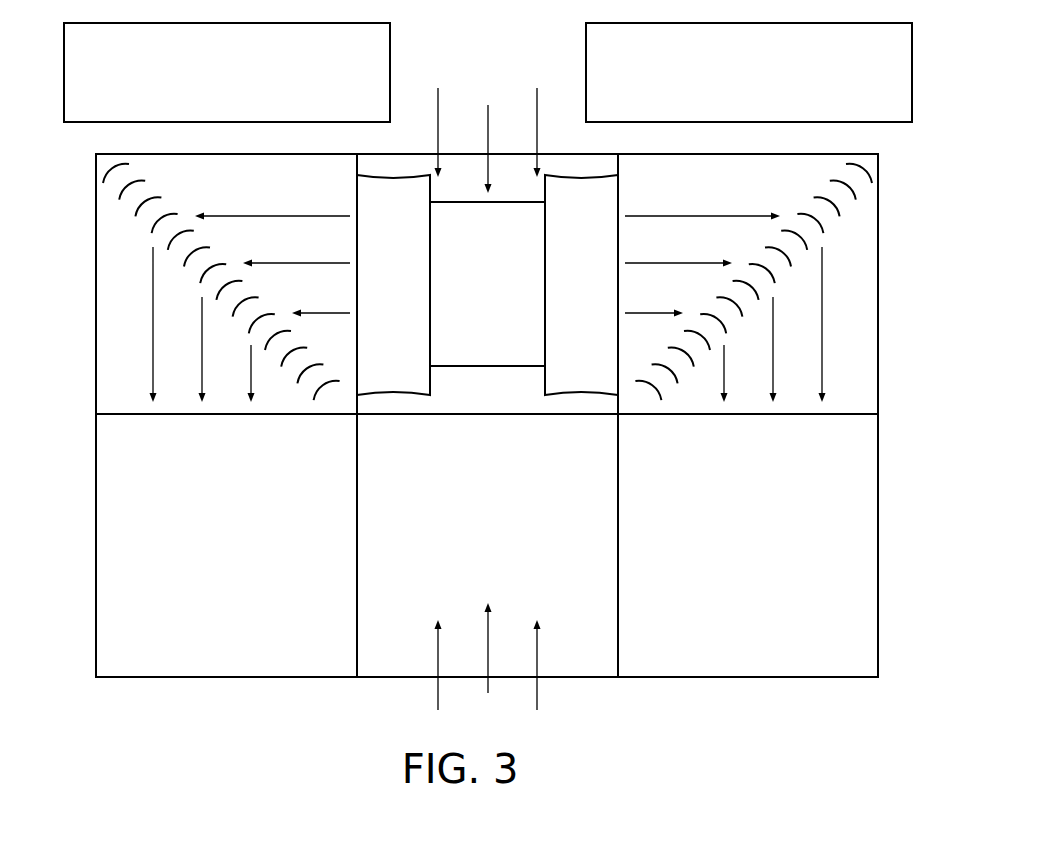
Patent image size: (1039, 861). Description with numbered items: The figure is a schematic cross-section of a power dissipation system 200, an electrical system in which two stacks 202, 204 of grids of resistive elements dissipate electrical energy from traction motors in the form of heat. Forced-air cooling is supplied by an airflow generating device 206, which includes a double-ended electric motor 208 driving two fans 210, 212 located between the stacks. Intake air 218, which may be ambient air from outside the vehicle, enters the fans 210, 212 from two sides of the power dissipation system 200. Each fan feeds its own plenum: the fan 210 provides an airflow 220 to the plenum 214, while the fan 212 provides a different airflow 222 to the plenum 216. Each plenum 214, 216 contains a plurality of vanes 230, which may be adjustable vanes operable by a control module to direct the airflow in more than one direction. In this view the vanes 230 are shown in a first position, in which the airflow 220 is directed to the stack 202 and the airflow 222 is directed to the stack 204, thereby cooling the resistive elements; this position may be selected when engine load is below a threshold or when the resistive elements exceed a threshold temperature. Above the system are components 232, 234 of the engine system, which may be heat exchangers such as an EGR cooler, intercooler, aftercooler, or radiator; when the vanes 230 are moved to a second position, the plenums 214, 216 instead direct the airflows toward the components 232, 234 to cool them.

The power dissipation system 200 is at (945, 178).
The stack 202 is at (212, 555).
The stack 204 is at (737, 555).
The airflow generating device 206 is at (498, 397).
The double-ended electric motor 208 is at (473, 295).
The fan 210 is at (377, 295).
The fan 212 is at (567, 295).
The plenum 214 is at (304, 192).
The plenum 216 is at (641, 192).
The intake air 218 is at (536, 97).
The airflow 220 is at (265, 213).
The airflow 222 is at (710, 213).
The vanes 230 is at (137, 213).
The component of the engine system 232 is at (212, 80).
The component of the engine system 234 is at (733, 80).